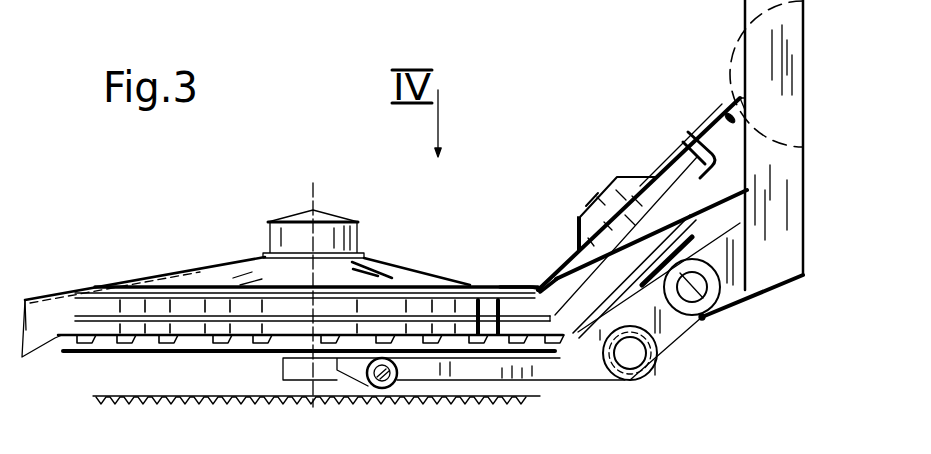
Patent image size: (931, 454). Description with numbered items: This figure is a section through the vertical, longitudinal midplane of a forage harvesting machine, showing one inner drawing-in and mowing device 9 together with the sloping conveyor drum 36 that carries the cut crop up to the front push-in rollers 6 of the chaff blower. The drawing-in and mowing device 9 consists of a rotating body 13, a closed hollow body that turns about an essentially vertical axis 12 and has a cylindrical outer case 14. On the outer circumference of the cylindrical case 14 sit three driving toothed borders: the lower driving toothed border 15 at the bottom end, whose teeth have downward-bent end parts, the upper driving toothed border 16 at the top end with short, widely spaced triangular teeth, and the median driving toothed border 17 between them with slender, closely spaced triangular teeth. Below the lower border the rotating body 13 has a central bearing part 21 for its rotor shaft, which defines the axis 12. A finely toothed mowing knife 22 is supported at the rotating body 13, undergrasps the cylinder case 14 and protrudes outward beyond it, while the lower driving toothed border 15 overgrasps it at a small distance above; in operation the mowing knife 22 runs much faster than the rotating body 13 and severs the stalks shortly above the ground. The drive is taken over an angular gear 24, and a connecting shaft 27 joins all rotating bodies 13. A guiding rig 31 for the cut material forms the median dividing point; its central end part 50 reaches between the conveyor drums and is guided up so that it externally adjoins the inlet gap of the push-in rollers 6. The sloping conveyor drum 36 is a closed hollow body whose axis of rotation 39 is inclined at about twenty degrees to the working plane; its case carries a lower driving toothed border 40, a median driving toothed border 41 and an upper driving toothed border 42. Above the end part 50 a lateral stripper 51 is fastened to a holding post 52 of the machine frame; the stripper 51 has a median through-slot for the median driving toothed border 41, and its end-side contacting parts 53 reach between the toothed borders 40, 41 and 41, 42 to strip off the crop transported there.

The push-in rollers 6 is at (746, 30).
The drawing-in and mowing device 9 is at (198, 266).
The vertical axis 12 is at (312, 183).
The rotating body 13 is at (365, 267).
The cylindrical outer case 14 is at (145, 312).
The lower driving toothed border 15 is at (152, 341).
The upper driving toothed border 16 is at (462, 285).
The median driving toothed border 17 is at (397, 313).
The central bearing part 21 is at (283, 364).
The mowing knife 22 is at (93, 354).
The angular gear 24 is at (702, 320).
The connecting shaft 27 is at (386, 379).
The guiding rig 31 is at (40, 320).
The sloping conveyor drum 36 is at (606, 185).
The axis of rotation 39 is at (598, 193).
The lower driving toothed border 40 is at (580, 336).
The median driving toothed border 41 is at (557, 280).
The upper driving toothed border 42 is at (578, 233).
The central end part 50 is at (663, 172).
The lateral stripper 51 is at (728, 116).
The holding post 52 is at (738, 62).
The end-side contacting parts 53 is at (700, 148).